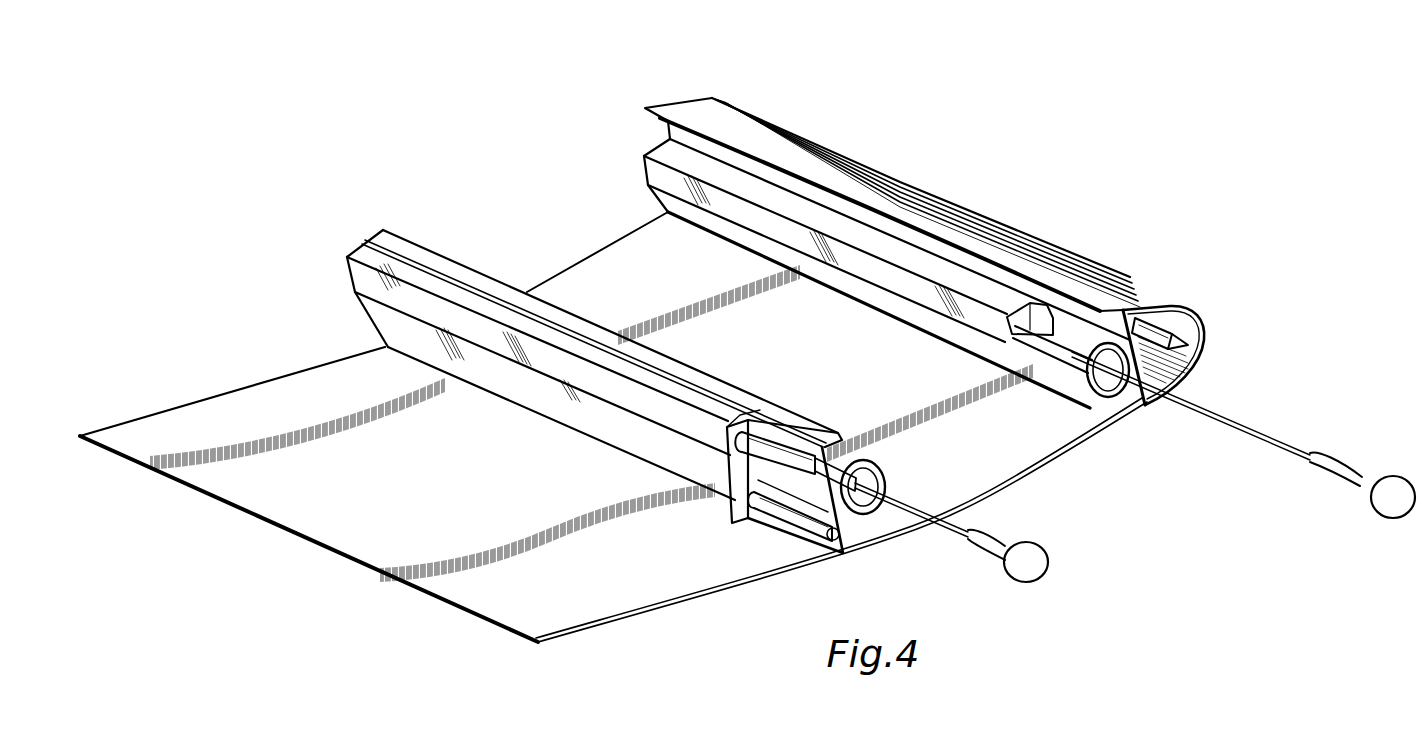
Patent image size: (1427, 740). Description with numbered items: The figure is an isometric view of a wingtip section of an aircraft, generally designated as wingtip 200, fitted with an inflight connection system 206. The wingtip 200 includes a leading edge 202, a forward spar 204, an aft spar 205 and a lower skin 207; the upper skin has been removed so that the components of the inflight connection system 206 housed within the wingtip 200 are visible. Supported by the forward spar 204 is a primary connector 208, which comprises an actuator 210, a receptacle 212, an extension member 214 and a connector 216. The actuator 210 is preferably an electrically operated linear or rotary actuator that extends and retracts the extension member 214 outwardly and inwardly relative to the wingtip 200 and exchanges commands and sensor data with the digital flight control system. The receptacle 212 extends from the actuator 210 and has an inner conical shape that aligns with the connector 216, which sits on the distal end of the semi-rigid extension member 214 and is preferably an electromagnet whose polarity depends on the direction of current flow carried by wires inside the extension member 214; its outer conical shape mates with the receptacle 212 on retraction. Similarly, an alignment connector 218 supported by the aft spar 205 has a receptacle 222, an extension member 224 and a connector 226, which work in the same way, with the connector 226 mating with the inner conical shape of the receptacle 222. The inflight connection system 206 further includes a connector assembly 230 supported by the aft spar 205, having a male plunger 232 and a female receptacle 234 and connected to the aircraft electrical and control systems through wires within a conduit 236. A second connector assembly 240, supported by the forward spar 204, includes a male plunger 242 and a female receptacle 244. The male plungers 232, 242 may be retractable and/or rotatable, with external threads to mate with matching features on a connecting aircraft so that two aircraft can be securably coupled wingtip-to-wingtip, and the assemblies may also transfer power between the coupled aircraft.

The wingtip 200 is at (914, 102).
The leading edge 202 is at (812, 147).
The forward spar 204 is at (667, 108).
The aft spar 205 is at (388, 240).
The inflight connection system 206 is at (996, 328).
The lower skin 207 is at (598, 603).
The primary connector 208 is at (1289, 442).
The actuator 210 is at (950, 278).
The receptacle 212 is at (1092, 398).
The extension member 214 is at (1222, 425).
The connector 216 is at (1343, 470).
The alignment connector 218 is at (902, 500).
The receptacle 222 is at (866, 460).
The extension member 224 is at (922, 515).
The connector 226 is at (1020, 585).
The connector assembly 230 is at (775, 532).
The male plunger 232 is at (778, 435).
The female receptacle 234 is at (814, 548).
The conduit 236 is at (445, 290).
The connector assembly 240 is at (1148, 318).
The male plunger 242 is at (1170, 342).
The female receptacle 244 is at (1192, 365).